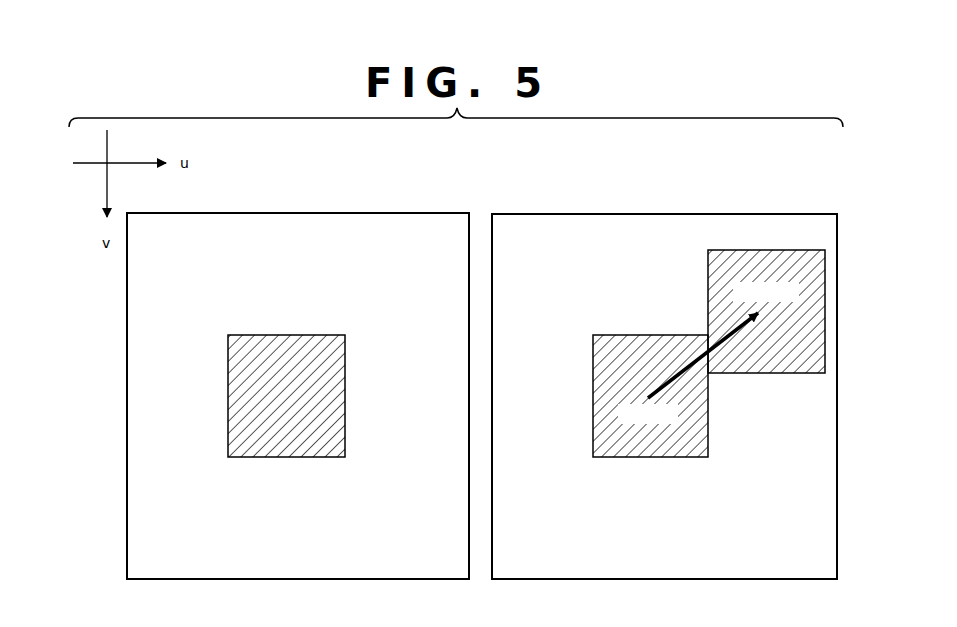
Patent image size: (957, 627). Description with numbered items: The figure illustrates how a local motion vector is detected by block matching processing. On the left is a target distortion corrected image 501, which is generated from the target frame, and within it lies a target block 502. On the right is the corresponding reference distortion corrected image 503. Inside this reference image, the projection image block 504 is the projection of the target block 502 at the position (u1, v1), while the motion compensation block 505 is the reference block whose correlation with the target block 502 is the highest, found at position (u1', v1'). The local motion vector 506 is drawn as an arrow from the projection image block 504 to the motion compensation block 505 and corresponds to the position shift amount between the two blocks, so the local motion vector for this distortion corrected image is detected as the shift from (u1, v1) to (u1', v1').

The target distortion corrected image 501 is at (423, 213).
The target block 502 is at (318, 335).
The reference distortion corrected image 503 is at (789, 214).
The projection image block 504 is at (690, 458).
The motion compensation block 505 is at (812, 373).
The local motion vector 506 is at (690, 362).